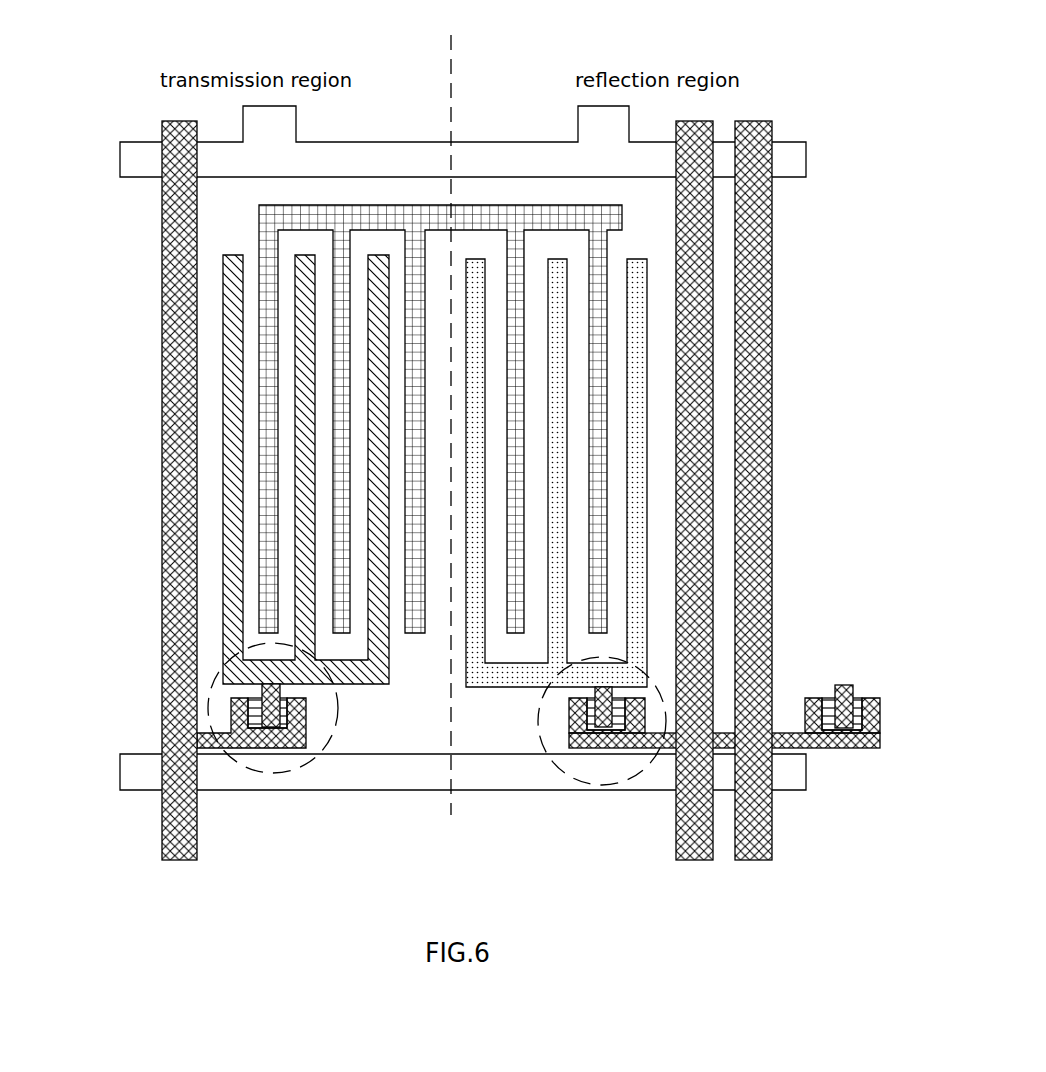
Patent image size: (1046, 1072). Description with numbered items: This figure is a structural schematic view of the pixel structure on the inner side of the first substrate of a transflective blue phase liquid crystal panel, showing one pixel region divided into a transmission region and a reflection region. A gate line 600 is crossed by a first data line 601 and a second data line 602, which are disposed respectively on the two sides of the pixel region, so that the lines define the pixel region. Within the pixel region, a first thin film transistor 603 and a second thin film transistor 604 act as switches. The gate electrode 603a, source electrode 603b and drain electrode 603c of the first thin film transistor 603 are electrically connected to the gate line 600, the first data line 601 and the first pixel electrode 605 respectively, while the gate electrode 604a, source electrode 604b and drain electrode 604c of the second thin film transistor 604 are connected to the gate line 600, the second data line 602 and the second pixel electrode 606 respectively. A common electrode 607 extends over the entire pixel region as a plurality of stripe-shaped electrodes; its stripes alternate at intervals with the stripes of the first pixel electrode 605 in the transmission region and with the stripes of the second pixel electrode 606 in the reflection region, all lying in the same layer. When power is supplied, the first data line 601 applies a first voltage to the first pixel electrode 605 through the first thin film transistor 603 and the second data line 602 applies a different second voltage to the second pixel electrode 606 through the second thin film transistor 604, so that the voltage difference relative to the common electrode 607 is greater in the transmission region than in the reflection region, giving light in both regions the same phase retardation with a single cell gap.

The gate line 600 is at (140, 767).
The first data line 601 is at (162, 847).
The second data line 602 is at (710, 857).
The first thin film transistor 603 is at (250, 766).
The gate electrode of the first thin film transistor 603a is at (257, 753).
The source electrode of the first thin film transistor 603b is at (283, 750).
The drain electrode of the first thin film transistor 603c is at (280, 705).
The second thin film transistor 604 is at (673, 738).
The gate electrode of the second thin film transistor 604a is at (618, 753).
The source electrode of the second thin film transistor 604b is at (597, 747).
The drain electrode of the second thin film transistor 604c is at (572, 727).
The first pixel electrode 605 is at (225, 470).
The second pixel electrode 606 is at (642, 497).
The common electrode 607 is at (602, 252).